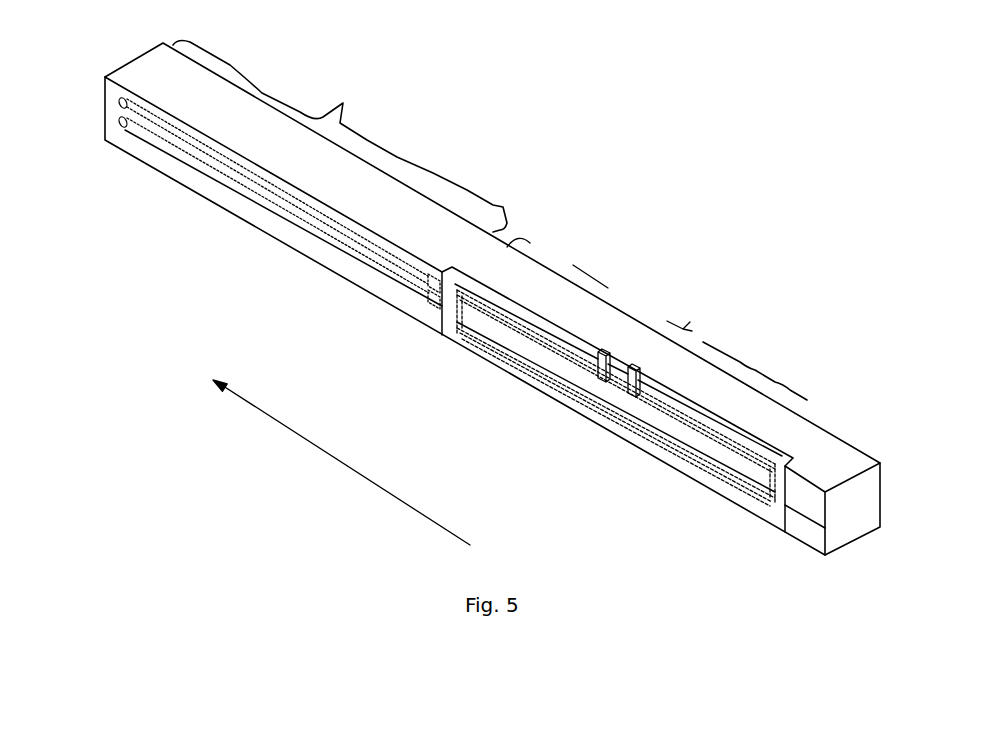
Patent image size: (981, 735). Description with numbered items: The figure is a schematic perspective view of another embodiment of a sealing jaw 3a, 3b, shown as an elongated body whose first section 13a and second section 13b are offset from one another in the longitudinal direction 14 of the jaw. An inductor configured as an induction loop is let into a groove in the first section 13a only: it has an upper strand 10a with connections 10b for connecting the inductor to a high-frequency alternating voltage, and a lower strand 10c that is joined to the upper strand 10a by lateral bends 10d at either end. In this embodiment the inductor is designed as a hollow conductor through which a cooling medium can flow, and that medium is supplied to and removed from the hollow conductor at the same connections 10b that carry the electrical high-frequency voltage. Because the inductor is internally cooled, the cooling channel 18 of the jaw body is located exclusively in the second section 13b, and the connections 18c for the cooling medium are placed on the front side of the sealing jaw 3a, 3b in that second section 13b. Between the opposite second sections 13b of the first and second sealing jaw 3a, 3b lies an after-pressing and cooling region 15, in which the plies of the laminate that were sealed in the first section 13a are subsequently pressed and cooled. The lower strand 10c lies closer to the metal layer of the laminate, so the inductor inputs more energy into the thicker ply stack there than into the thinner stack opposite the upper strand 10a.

The sealing jaw 3a is at (652, 107).
The sealing jaw 3b is at (475, 329).
The upper strand 10a is at (546, 342).
The connections 10b is at (642, 355).
The lower strand 10c is at (635, 408).
The lateral bends 10d is at (457, 317).
The first section 13a is at (737, 344).
The second section 13b is at (390, 164).
The longitudinal direction 14 is at (341, 462).
The after-pressing and cooling region 15 is at (212, 203).
The cooling channel 18 is at (247, 190).
The connections for the cooling medium 18c is at (117, 100).